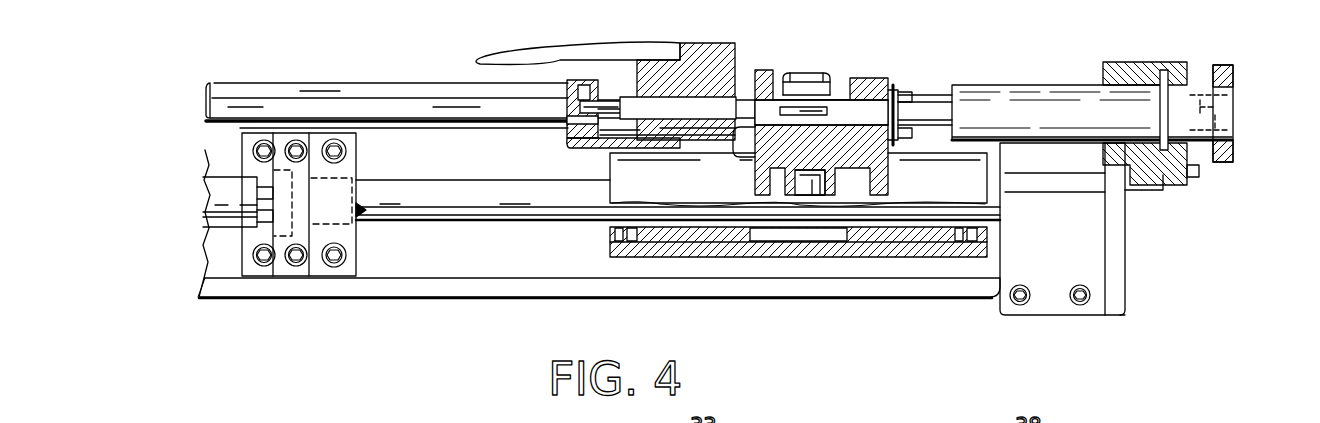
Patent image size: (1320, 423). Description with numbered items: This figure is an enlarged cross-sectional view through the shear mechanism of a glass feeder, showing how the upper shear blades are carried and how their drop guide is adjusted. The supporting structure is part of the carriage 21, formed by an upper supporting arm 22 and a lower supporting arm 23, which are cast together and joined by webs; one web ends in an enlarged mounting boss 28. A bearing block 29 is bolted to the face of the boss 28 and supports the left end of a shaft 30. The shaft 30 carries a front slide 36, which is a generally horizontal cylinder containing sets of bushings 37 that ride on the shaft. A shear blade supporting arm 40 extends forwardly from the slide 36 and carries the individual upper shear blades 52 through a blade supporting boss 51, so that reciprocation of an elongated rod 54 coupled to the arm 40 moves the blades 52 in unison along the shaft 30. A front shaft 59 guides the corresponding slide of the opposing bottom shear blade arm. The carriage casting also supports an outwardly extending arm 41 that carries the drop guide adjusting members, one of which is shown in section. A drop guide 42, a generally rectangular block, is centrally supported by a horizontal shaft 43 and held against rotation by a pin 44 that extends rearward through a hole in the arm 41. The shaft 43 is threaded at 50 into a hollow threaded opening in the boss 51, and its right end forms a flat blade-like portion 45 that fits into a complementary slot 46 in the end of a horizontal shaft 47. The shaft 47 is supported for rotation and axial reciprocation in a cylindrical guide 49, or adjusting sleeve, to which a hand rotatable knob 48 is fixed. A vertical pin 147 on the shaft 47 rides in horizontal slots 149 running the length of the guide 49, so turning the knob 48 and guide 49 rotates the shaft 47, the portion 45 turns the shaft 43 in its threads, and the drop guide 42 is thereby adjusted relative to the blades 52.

The carriage 21 is at (473, 422).
The upper supporting arm 22 is at (400, 90).
The lower supporting arm 23 is at (447, 292).
The mounting boss 28 is at (337, 133).
The bearing block 29 is at (350, 236).
The shaft 30 is at (444, 203).
The front slide 36 is at (682, 190).
The bushings 37 is at (862, 235).
The shear blade supporting arm 40 is at (872, 80).
The arm 41 is at (1088, 250).
The drop guide 42 is at (568, 128).
The horizontal shaft 43 is at (610, 98).
The pin 44 is at (612, 149).
The blade-like portion 45 is at (742, 160).
The slot 46 is at (820, 107).
The horizontal shaft 47 is at (925, 108).
The hand rotatable knob 48 is at (1222, 162).
The cylindrical guide 49 is at (1020, 95).
The threaded portion 50 is at (670, 108).
The blade supporting boss 51 is at (730, 75).
The upper shear blades 52 is at (575, 55).
The elongated rod 54 is at (428, 105).
The front shaft 59 is at (212, 197).
The vertical pin 147 is at (1235, 125).
The horizontal slots 149 is at (1232, 98).